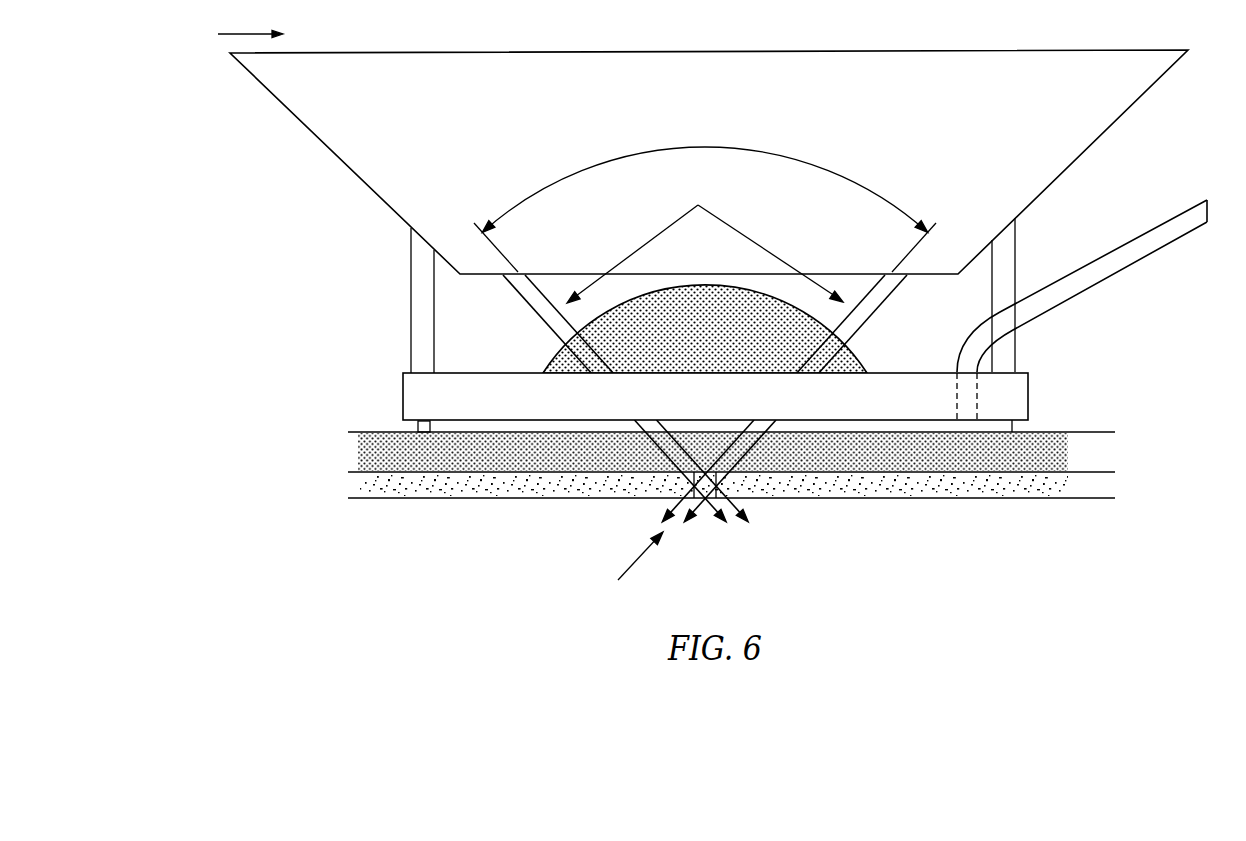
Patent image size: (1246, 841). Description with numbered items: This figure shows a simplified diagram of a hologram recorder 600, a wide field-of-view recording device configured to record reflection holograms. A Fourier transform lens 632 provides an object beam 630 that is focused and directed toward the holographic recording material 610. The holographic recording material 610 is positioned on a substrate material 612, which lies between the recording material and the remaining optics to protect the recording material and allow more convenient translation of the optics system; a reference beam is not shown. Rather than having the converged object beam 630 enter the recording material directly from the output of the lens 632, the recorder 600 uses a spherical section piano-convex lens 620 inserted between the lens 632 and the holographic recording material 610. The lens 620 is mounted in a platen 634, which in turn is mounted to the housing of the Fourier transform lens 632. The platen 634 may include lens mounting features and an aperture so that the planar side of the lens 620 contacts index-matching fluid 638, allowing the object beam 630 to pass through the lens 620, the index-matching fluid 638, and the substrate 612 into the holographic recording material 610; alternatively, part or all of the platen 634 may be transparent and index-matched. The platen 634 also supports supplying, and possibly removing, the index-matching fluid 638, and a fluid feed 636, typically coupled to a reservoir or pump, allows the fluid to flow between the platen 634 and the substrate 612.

The hologram recorder 600 is at (863, 575).
The holographic recording material 610 is at (362, 489).
The substrate material 612 is at (362, 455).
The spherical section piano-convex lens 620 is at (719, 336).
The object beam 630 is at (880, 305).
The Fourier transform lens 632 is at (438, 152).
The platen 634 is at (722, 408).
The fluid feed 636 is at (1050, 293).
The index-matching fluid 638 is at (430, 430).